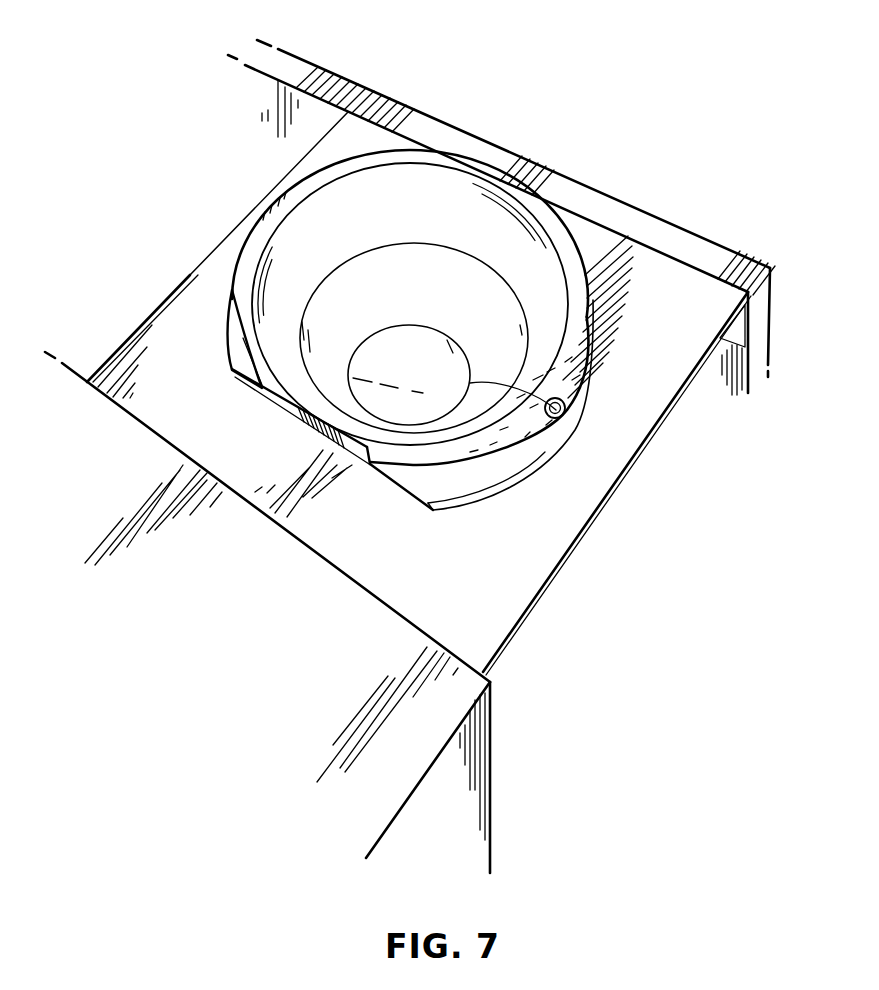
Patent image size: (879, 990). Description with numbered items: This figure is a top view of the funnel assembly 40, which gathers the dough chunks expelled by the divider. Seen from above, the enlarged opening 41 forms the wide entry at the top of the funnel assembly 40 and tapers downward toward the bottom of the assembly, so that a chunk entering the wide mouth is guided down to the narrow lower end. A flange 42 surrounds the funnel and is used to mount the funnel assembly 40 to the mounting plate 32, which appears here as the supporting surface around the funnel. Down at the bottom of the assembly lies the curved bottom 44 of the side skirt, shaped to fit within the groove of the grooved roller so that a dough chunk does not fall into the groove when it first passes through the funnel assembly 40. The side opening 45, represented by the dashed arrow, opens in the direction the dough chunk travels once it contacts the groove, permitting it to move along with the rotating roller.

The mounting plate 32 is at (627, 248).
The funnel assembly 40 is at (452, 156).
The enlarged opening 41 is at (415, 213).
The flange 42 is at (480, 460).
The curved bottom 44 is at (563, 413).
The side opening 45 is at (218, 350).